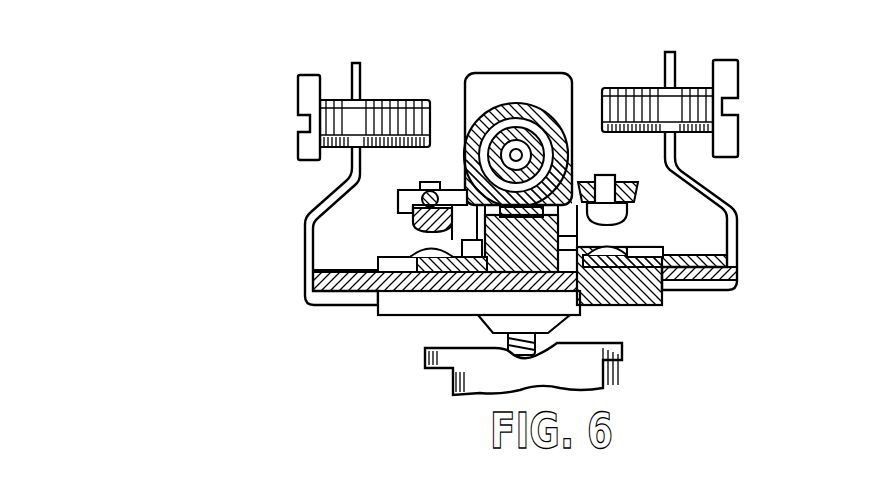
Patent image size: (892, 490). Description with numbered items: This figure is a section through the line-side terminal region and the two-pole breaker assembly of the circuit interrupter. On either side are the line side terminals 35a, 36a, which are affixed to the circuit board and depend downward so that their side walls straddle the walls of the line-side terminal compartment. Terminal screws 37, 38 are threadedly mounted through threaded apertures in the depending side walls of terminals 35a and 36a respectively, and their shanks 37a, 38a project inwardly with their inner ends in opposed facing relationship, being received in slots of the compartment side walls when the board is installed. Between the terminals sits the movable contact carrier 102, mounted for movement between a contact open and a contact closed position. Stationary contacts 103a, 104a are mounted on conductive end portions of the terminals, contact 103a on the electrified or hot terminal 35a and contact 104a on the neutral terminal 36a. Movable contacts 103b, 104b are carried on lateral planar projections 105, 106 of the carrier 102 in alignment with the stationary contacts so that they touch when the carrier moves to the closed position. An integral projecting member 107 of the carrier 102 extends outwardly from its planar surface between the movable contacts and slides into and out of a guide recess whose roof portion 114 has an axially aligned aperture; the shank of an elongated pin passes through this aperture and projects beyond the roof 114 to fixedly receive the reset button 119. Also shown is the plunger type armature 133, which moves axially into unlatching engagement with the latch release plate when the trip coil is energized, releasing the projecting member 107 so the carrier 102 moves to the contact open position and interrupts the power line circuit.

The line side terminal 35a is at (708, 190).
The line side terminal 36a is at (323, 200).
The terminal screw 37 is at (727, 75).
The shank 37a is at (694, 88).
The terminal screw 38 is at (298, 97).
The shank 38a is at (398, 97).
The movable contact carrier 102 is at (450, 190).
The stationary contact 103a is at (598, 247).
The movable contact 103b is at (627, 218).
The stationary contact 104a is at (413, 248).
The movable contact 104b is at (413, 230).
The lateral planar projection 105 is at (612, 180).
The lateral planar projection 106 is at (410, 190).
The projecting member 107 is at (633, 305).
The roof portion 114 is at (500, 318).
The reset button 119 is at (605, 368).
The plunger type armature 133 is at (516, 149).